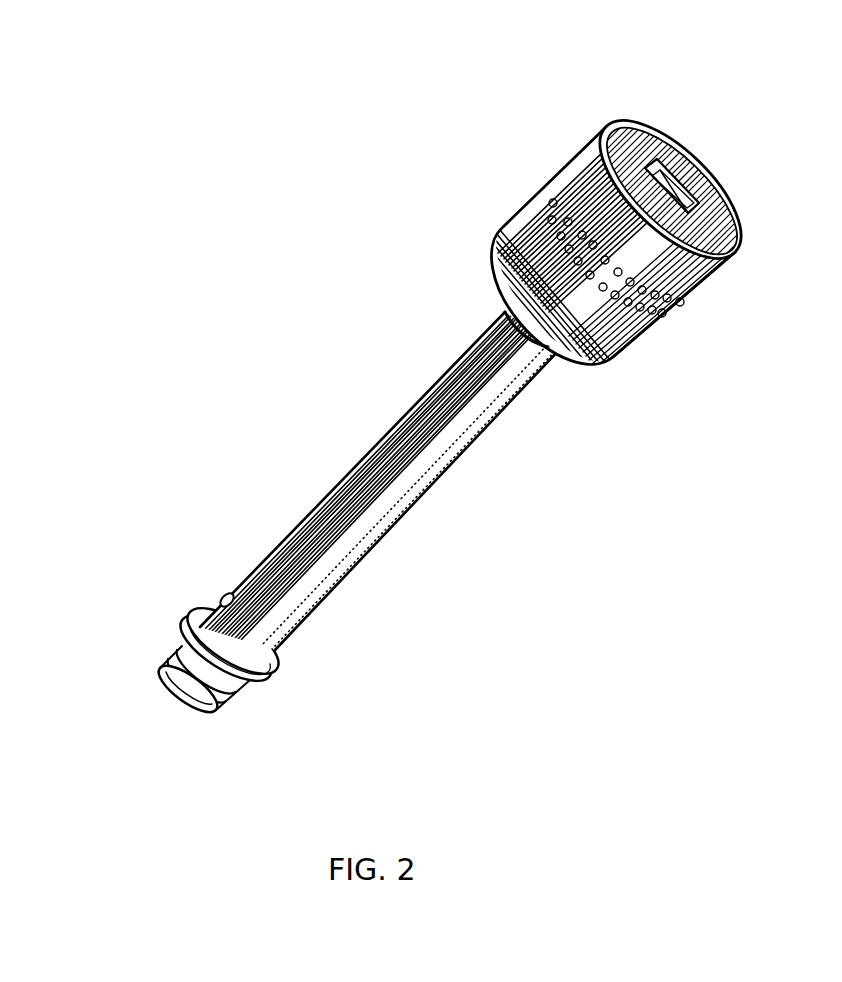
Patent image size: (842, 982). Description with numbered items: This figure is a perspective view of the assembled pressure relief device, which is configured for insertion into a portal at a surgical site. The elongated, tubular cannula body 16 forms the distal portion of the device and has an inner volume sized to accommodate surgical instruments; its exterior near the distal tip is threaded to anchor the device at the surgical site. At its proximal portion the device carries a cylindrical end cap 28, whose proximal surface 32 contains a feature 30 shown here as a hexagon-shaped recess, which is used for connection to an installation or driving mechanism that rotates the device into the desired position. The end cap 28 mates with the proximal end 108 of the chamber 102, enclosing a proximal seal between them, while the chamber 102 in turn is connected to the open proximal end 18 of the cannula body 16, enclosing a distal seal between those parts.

The cannula body 16 is at (357, 463).
The open proximal end 18 is at (643, 236).
The end cap 28 is at (590, 141).
The feature 30 is at (672, 183).
The proximal surface 32 is at (716, 215).
The chamber 102 is at (647, 337).
The proximal end of the chamber 108 is at (696, 315).